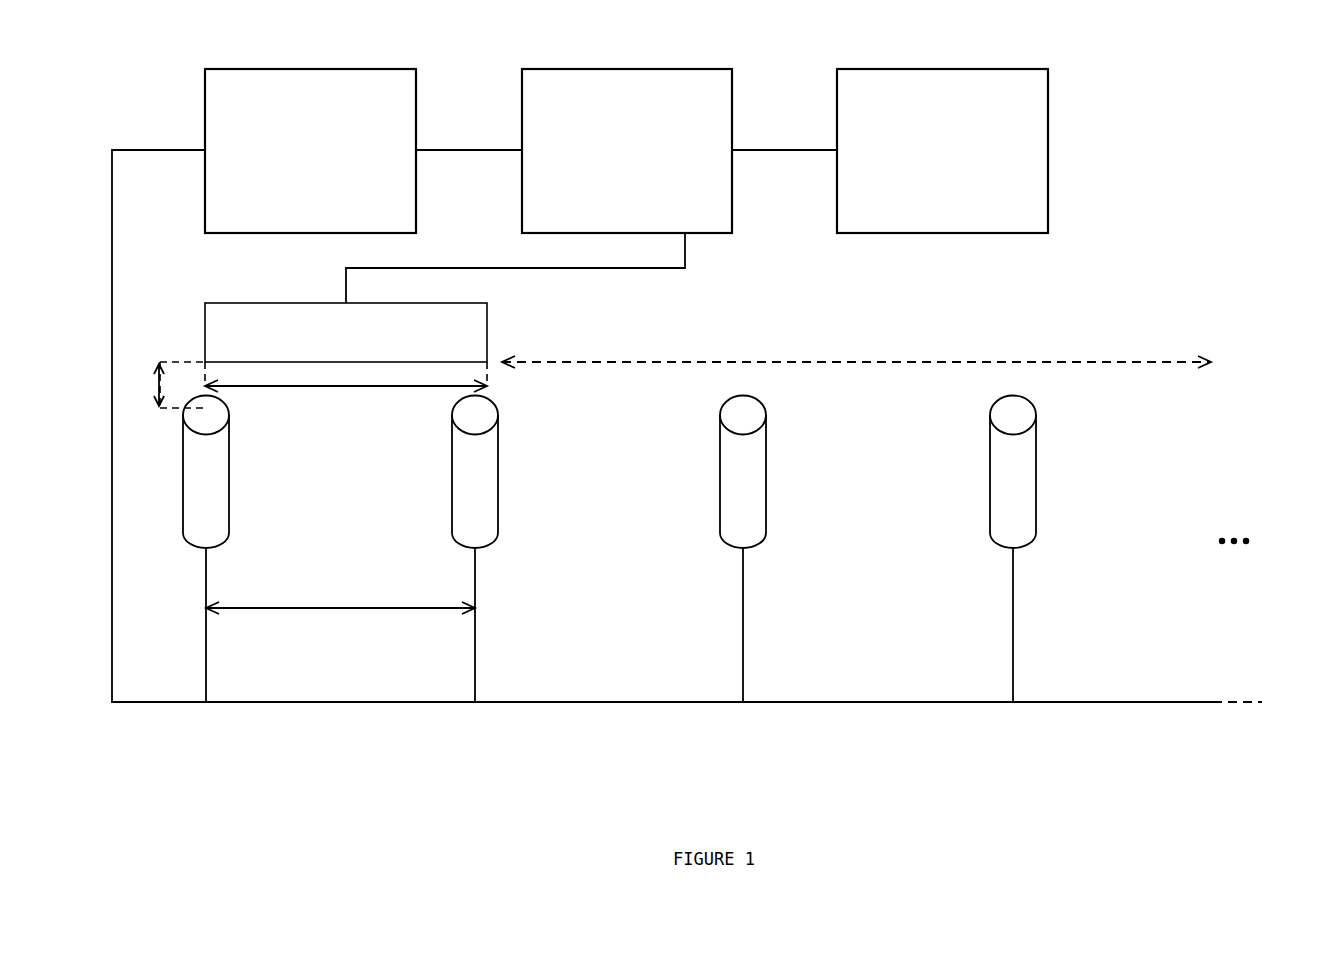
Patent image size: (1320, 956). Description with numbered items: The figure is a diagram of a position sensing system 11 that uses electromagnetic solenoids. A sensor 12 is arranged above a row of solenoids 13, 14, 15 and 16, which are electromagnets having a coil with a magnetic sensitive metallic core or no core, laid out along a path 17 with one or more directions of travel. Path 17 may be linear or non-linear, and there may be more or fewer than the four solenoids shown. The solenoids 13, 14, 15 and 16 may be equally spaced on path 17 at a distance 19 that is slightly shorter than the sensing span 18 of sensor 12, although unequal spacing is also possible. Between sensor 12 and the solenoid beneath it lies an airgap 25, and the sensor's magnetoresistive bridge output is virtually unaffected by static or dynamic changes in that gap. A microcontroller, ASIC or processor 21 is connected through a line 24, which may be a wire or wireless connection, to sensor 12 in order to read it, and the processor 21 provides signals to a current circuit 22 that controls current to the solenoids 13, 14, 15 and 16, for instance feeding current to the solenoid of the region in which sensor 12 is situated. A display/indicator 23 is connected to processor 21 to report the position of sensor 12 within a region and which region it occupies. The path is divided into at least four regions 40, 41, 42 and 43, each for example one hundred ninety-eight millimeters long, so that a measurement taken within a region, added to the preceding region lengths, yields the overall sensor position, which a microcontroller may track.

The position sensing system 11 is at (1156, 149).
The sensor 12 is at (487, 340).
The solenoid 13 is at (229, 472).
The solenoid 14 is at (498, 472).
The solenoid 15 is at (766, 472).
The solenoid 16 is at (1036, 472).
The path 17 is at (859, 362).
The sensing span 18 is at (345, 387).
The distance 19 is at (347, 609).
The processor 21 is at (732, 127).
The current circuit 22 is at (416, 127).
The display/indicator 23 is at (1048, 127).
The line 24 is at (615, 268).
The airgap 25 is at (157, 385).
The region 40 is at (343, 553).
The region 41 is at (615, 553).
The region 42 is at (886, 553).
The region 43 is at (1149, 553).